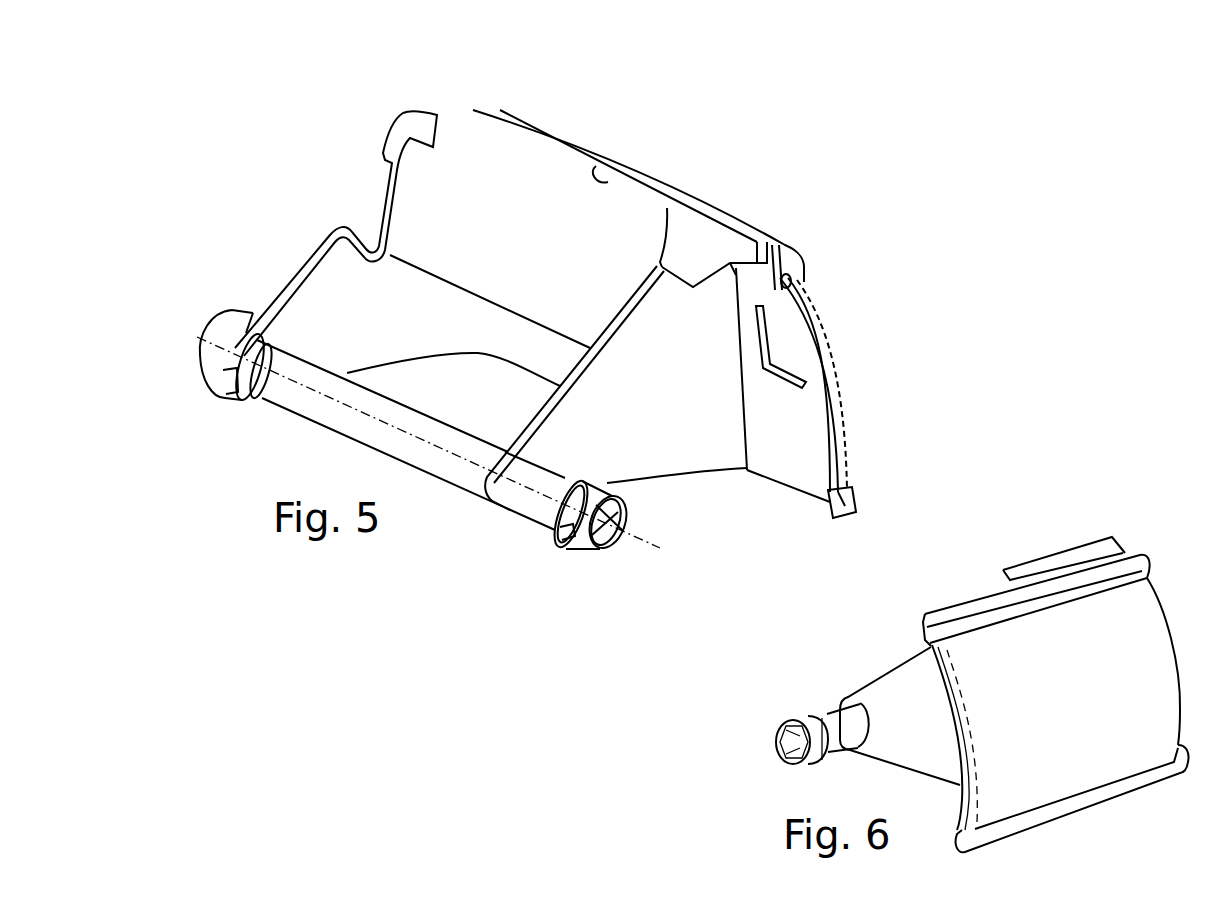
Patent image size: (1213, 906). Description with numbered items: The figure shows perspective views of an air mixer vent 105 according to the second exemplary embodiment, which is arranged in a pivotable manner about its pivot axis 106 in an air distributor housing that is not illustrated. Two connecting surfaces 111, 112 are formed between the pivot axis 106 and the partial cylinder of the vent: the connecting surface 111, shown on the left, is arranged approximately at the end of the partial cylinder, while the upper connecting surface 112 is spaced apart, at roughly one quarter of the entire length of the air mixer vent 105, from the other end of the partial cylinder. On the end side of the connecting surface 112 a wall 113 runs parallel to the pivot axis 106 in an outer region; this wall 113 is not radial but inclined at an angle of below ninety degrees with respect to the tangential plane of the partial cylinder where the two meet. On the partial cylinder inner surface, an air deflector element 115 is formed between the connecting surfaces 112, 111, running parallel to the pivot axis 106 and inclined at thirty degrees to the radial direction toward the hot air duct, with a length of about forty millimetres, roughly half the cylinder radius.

The air mixer vent 105 is at (872, 239).
The pivot axis 106 is at (642, 543).
The connecting surface 111 is at (330, 257).
The upper connecting surface 112 is at (670, 423).
The wall 113 is at (705, 255).
The air deflector element 115 is at (490, 272).